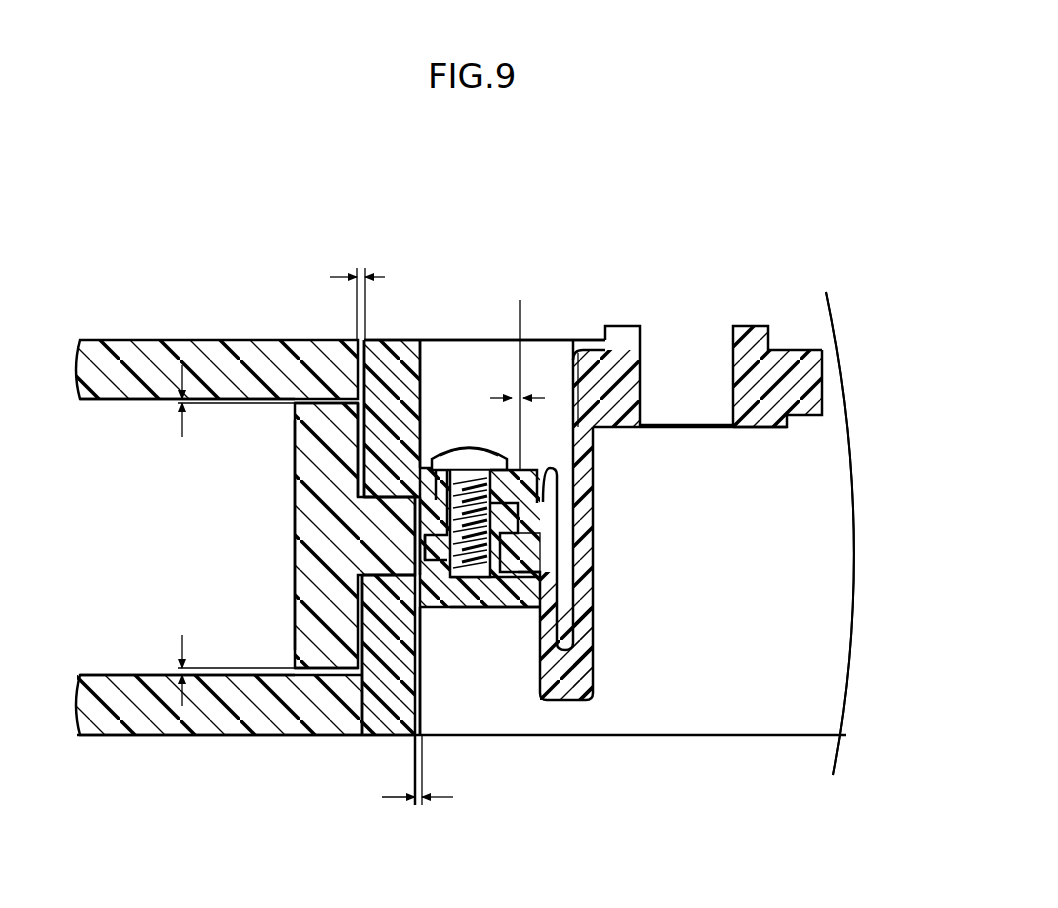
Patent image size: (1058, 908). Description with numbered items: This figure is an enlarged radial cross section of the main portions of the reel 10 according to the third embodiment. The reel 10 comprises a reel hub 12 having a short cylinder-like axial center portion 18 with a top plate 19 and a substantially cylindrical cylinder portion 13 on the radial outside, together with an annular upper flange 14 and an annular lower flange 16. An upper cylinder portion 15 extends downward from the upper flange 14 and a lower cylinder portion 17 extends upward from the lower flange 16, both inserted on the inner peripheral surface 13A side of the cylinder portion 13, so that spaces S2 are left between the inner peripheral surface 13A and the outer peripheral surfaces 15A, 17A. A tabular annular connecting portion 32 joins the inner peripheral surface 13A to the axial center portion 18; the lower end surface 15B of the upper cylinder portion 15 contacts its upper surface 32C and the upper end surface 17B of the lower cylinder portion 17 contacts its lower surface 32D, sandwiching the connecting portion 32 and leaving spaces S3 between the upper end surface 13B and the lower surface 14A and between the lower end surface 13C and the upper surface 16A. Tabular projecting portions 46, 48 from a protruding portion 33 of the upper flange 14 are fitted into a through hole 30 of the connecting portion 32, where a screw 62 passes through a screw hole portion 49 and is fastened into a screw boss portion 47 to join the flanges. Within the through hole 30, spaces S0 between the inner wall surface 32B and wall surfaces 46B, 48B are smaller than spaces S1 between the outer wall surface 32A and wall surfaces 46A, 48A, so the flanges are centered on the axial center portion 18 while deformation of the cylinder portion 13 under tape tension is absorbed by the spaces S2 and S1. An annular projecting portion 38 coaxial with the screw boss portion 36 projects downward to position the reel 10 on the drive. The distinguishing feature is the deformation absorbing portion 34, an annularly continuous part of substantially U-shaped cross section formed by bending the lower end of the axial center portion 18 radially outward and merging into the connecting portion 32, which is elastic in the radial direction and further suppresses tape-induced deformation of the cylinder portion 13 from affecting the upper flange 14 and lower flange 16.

The reel 10 is at (679, 220).
The reel hub 12 is at (292, 539).
The cylinder portion 13 is at (298, 508).
The inner peripheral surface 13A is at (358, 462).
The upper end surface 13B is at (322, 403).
The lower end surface 13C is at (330, 690).
The upper flange 14 is at (150, 334).
The lower surface 14A is at (117, 401).
The upper cylinder portion 15 is at (425, 430).
The outer peripheral surface 15A is at (380, 470).
The lower end surface 15B is at (357, 500).
The lower flange 16 is at (147, 738).
The upper surface 16A is at (115, 673).
The lower cylinder portion 17 is at (426, 645).
The outer peripheral surface 17A is at (365, 618).
The upper end surface 17B is at (360, 582).
The axial center portion 18 is at (783, 364).
The top plate 19 is at (831, 516).
The through hole 30 is at (594, 640).
The connecting portion 32 is at (390, 690).
The wall surface 32A is at (418, 553).
The wall surface 32B is at (470, 565).
The upper surface 32C is at (380, 420).
The lower surface 32D is at (372, 690).
The protruding portion 33 is at (558, 345).
The deformation absorbing portion 34 is at (552, 463).
The screw boss portion 36 is at (730, 350).
The annular projecting portion 38 is at (770, 429).
The projecting portion 46 is at (540, 562).
The wall surface 46A is at (438, 456).
The wall surface 46B is at (512, 520).
The screw boss portion 47 is at (530, 512).
The projecting portion 48 is at (535, 575).
The wall surface 48A is at (505, 560).
The wall surface 48B is at (520, 575).
The screw hole portion 49 is at (476, 447).
The screw 62 is at (474, 470).
The space S0 is at (521, 396).
The space S1 is at (417, 805).
The space S2 is at (357, 270).
The space S3 is at (178, 405).